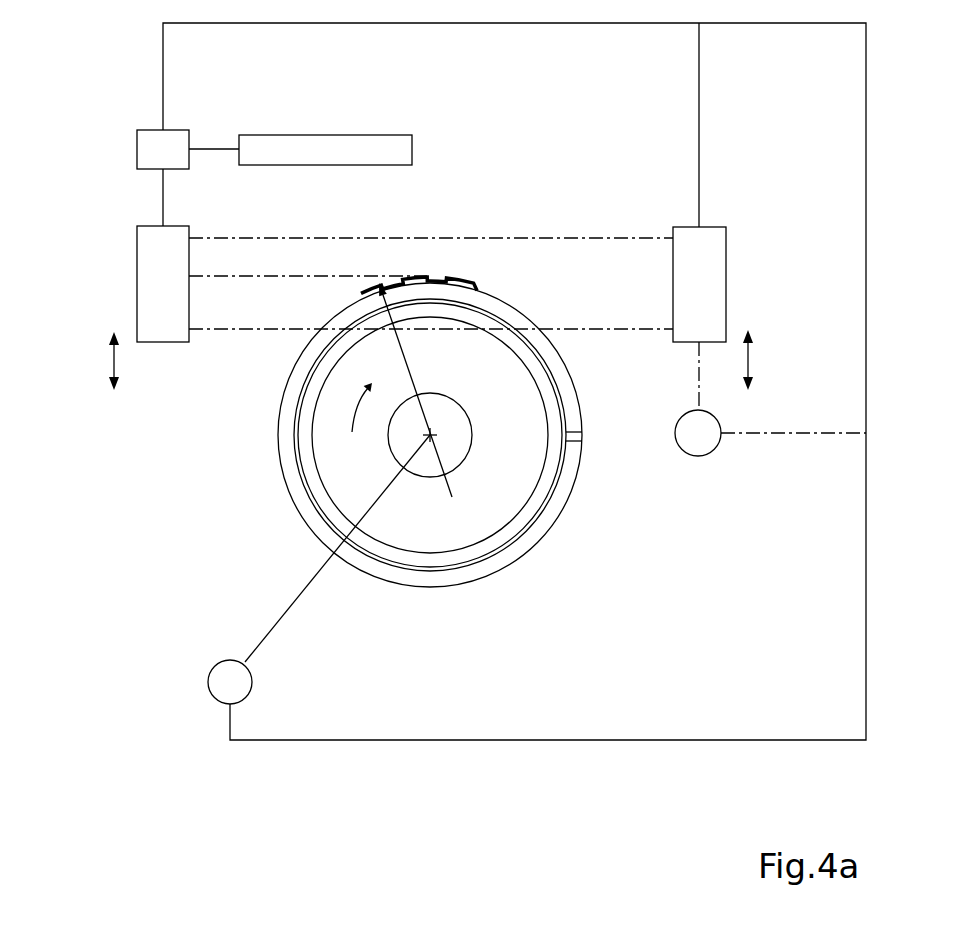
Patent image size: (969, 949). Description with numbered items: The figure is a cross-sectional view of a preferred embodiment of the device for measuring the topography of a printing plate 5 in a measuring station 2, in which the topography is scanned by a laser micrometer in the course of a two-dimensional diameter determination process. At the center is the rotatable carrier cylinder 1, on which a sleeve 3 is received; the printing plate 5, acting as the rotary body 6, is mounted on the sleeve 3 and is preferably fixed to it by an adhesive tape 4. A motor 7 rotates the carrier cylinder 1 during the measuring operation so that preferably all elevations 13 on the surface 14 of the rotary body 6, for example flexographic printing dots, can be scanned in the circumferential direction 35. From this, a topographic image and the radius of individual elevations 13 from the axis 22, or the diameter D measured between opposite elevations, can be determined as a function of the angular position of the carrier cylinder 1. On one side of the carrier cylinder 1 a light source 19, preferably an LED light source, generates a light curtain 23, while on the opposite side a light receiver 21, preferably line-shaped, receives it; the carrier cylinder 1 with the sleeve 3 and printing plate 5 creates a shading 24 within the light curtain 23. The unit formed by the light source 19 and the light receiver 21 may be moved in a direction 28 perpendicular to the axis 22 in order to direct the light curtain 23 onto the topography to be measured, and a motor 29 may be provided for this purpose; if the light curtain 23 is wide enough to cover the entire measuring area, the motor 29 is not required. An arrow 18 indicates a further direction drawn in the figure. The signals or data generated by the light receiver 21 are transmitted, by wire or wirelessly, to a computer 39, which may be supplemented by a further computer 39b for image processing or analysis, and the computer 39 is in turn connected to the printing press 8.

The carrier cylinder 1 is at (382, 527).
The measuring station 2 is at (485, 778).
The sleeve 3 is at (403, 557).
The adhesive tape 4 is at (558, 485).
The printing plate 5 is at (449, 430).
The rotary body 6 is at (449, 430).
The motor 7 is at (207, 683).
The printing press 8 is at (343, 148).
The elevations 13 is at (379, 278).
The surface 14 is at (553, 527).
The direction of movement 18 is at (762, 290).
The light source 19 is at (705, 260).
The light receiver 21 is at (157, 260).
The axis 22 is at (458, 513).
The light curtain 23 is at (608, 267).
The shading 24 is at (245, 312).
The direction 28 is at (112, 358).
The motor 29 is at (707, 453).
The circumferential direction 35 is at (350, 410).
The computer 39 is at (211, 113).
The further computer 39b is at (178, 147).
The diameter D is at (430, 437).